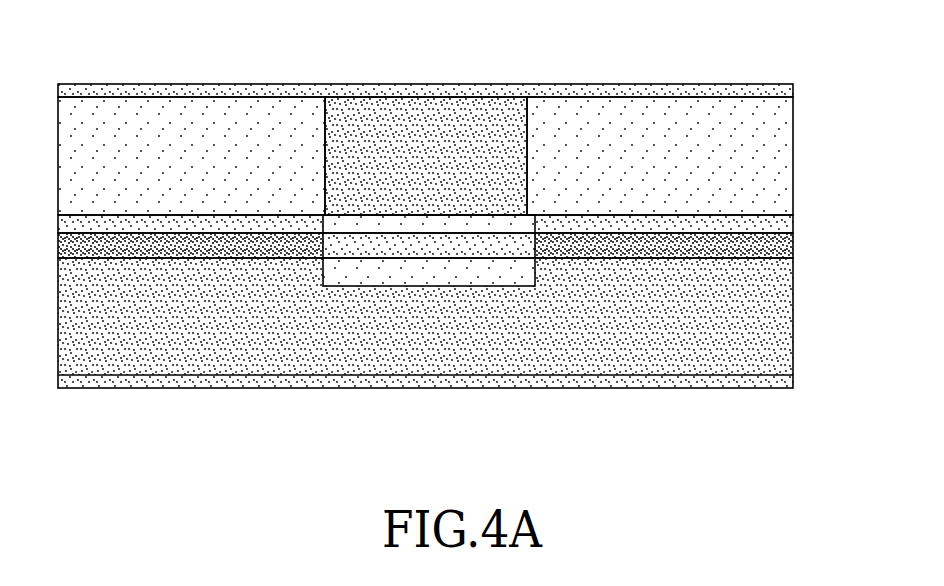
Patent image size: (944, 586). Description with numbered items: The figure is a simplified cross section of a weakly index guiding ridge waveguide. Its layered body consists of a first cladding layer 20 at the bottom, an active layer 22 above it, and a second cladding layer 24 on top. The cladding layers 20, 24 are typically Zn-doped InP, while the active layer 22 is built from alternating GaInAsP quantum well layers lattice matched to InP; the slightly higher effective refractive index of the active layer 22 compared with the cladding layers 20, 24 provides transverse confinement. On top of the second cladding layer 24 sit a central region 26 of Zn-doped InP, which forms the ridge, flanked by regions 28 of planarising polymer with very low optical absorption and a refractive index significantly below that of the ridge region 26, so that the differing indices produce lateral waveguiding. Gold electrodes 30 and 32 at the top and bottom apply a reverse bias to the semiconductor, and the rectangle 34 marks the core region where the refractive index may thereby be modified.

The first cladding layer 20 is at (773, 320).
The active layer 22 is at (793, 250).
The second cladding layer 24 is at (778, 222).
The region forming the ridge 26 is at (498, 125).
The planarising polymer regions 28 is at (187, 108).
The gold electrode 30 is at (443, 84).
The gold electrode 32 is at (295, 388).
The core region rectangle 34 is at (427, 277).